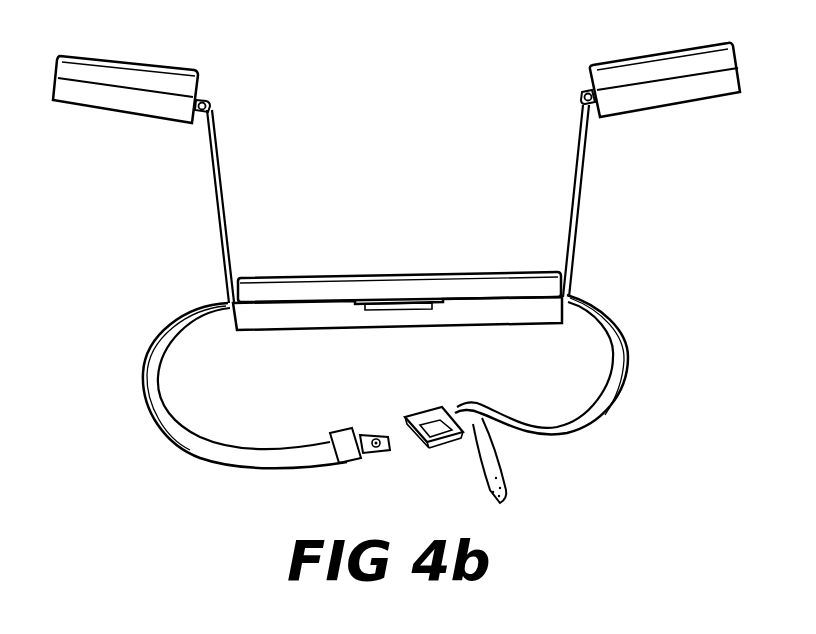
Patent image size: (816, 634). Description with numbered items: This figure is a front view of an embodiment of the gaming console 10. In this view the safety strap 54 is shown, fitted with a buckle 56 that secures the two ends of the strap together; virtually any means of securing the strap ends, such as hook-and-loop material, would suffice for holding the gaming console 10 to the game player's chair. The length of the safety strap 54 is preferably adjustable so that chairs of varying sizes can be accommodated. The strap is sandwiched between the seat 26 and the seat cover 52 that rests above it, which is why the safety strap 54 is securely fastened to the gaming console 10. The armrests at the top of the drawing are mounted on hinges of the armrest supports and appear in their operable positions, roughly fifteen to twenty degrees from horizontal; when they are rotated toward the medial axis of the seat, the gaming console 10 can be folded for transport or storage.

The gaming console 10 is at (381, 86).
The seat cover 52 is at (398, 283).
The seat 26 is at (500, 317).
The safety strap 54 is at (607, 415).
The buckle 56 is at (445, 447).